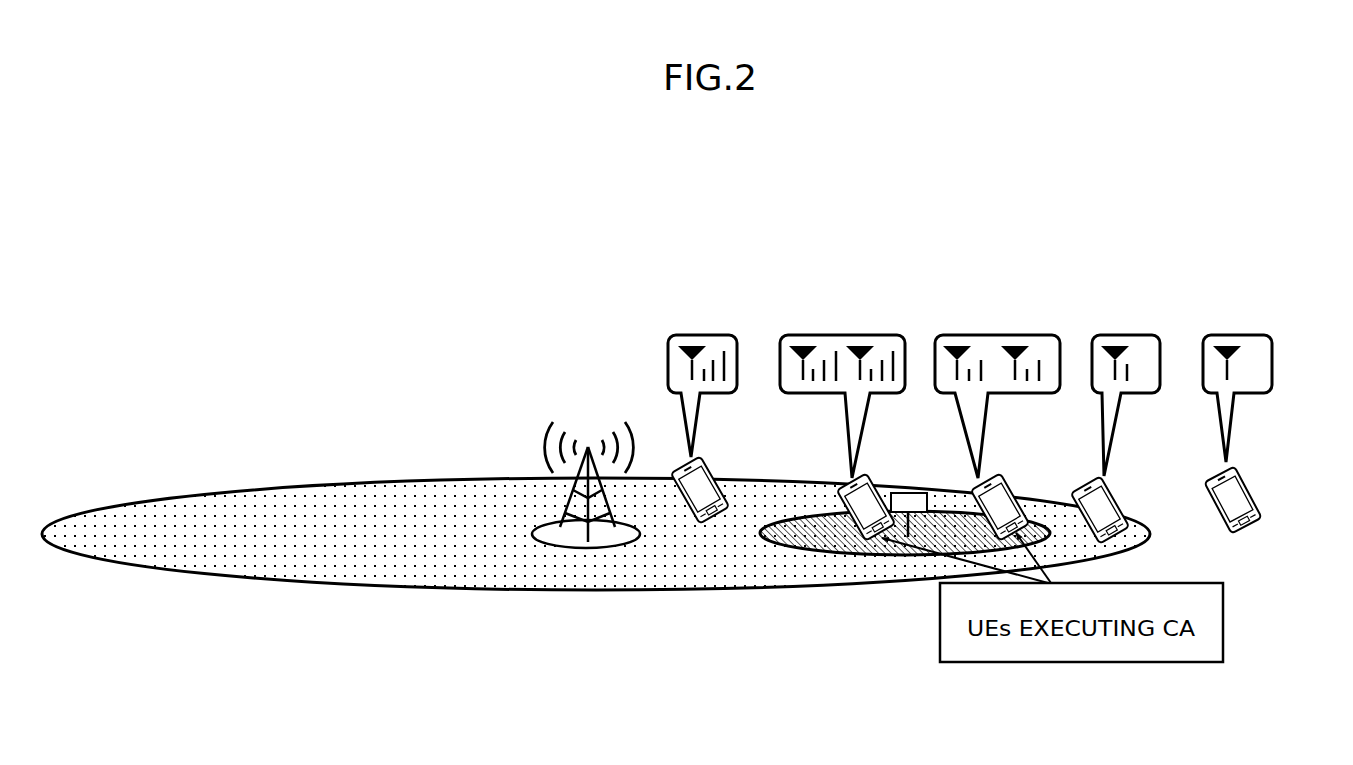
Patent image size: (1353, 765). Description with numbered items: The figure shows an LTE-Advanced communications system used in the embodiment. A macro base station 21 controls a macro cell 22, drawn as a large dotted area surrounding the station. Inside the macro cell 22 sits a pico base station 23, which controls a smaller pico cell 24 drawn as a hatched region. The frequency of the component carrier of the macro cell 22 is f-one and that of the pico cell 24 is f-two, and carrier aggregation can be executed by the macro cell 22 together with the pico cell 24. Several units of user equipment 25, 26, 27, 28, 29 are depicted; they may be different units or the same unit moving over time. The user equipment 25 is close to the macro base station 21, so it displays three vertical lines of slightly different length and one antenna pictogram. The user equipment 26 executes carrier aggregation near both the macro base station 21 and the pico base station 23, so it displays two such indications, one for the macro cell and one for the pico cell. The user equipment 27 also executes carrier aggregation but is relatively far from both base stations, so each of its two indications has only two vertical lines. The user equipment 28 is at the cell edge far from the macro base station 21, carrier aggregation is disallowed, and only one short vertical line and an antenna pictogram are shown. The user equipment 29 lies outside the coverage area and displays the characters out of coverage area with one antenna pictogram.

The macro base station 21 is at (572, 512).
The macro cell 22 is at (376, 481).
The pico base station 23 is at (905, 492).
The pico cell 24 is at (765, 543).
The user equipment 25 is at (704, 461).
The user equipment 26 is at (841, 499).
The user equipment 27 is at (1006, 480).
The user equipment 28 is at (1113, 493).
The user equipment 29 is at (1244, 471).